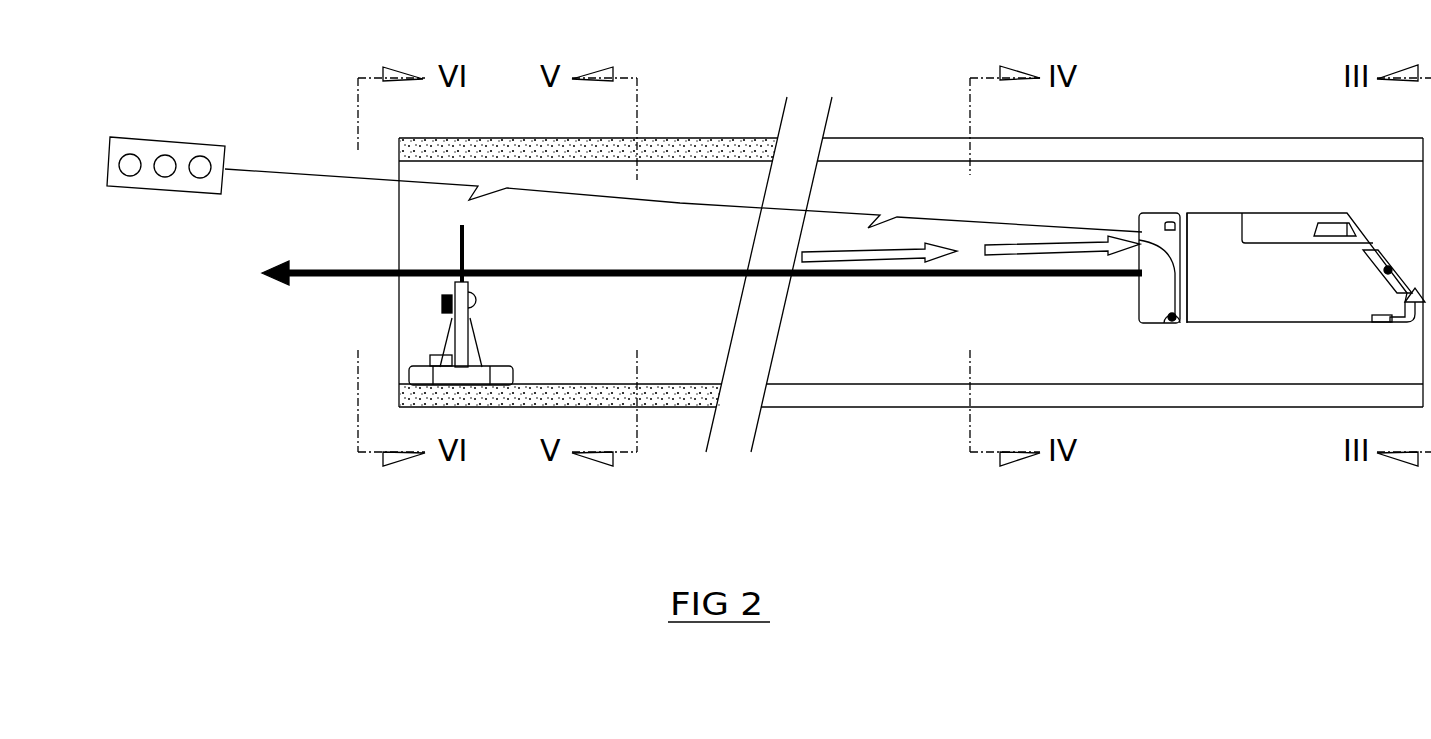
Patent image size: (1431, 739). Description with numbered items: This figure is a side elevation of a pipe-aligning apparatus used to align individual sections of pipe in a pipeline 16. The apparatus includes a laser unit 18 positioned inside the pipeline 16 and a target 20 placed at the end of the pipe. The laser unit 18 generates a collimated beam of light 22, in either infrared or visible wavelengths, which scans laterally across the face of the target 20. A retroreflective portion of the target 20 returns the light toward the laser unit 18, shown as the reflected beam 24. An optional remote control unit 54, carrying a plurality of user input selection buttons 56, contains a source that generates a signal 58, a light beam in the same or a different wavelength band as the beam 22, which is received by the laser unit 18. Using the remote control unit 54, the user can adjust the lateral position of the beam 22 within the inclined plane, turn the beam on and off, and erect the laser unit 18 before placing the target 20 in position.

The pipeline 16 is at (878, 407).
The laser unit 18 is at (1215, 323).
The target 20 is at (502, 377).
The collimated beam of light 22 is at (302, 268).
The reflected beam 24 is at (1062, 243).
The remote control unit 54 is at (170, 138).
The user input selection buttons 56 is at (127, 175).
The signal 58 is at (253, 168).